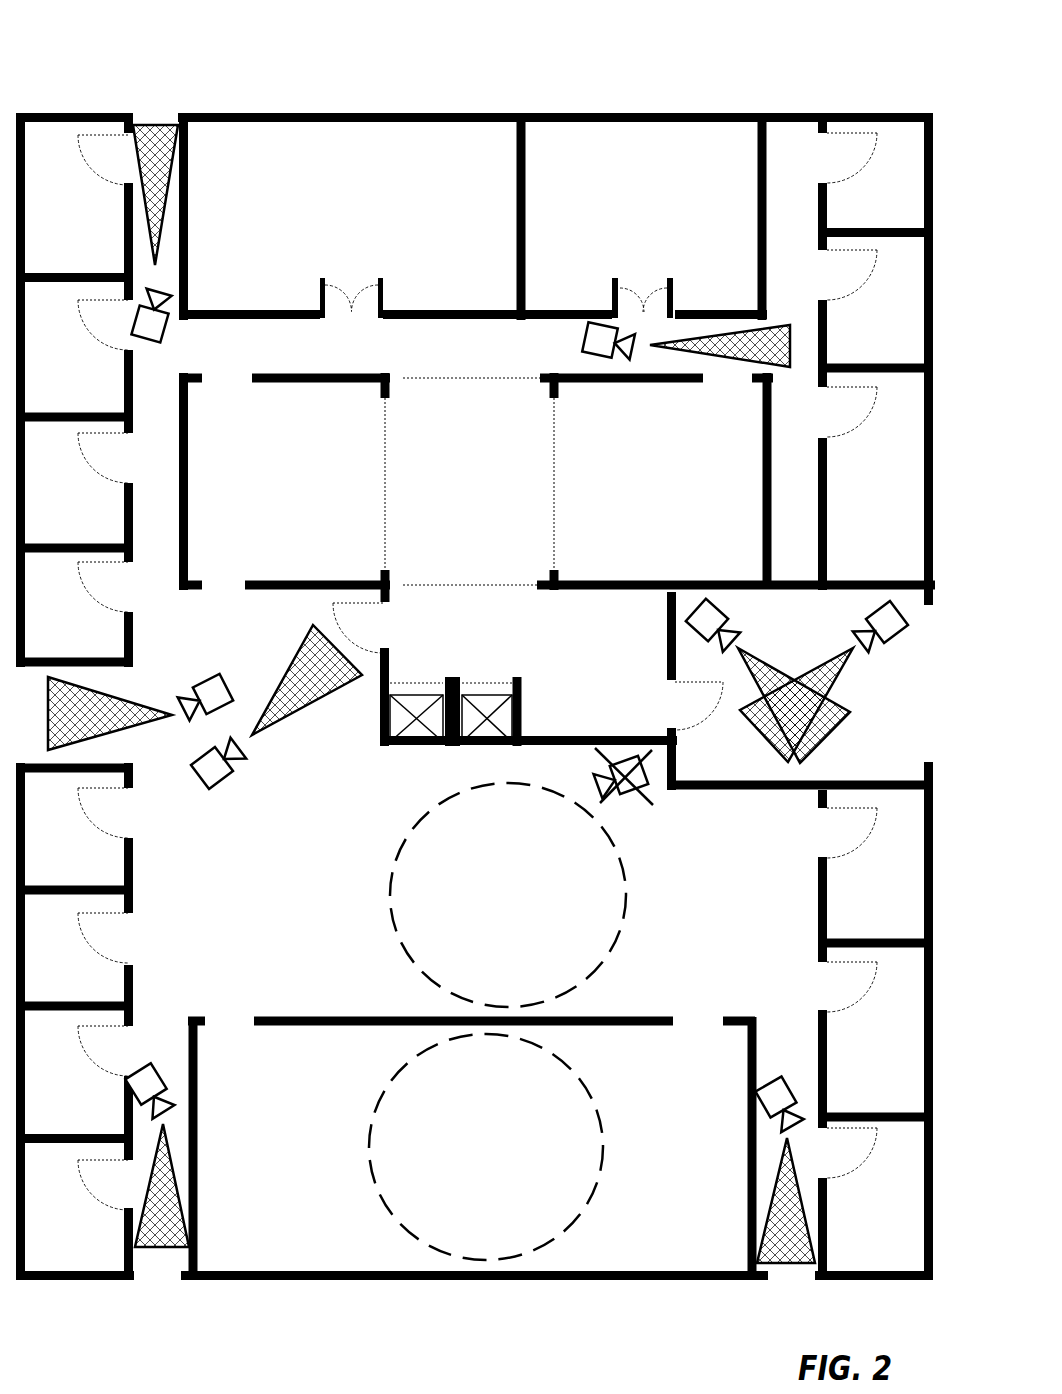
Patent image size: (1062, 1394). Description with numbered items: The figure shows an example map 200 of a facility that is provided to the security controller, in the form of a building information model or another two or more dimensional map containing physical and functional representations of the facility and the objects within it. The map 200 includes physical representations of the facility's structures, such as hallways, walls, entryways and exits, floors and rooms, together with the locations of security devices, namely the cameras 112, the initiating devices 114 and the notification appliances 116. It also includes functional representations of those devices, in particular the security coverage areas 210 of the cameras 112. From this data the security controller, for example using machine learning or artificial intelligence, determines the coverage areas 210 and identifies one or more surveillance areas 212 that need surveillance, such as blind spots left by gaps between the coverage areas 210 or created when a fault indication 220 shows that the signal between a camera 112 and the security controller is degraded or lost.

The map 200 is at (92, 52).
The camera 112 is at (153, 345).
The initiating device 114 is at (502, 795).
The notification appliance 116 is at (473, 680).
The security coverage area 210 is at (450, 694).
The surveillance area 212 is at (392, 866).
The fault indication 220 is at (653, 797).